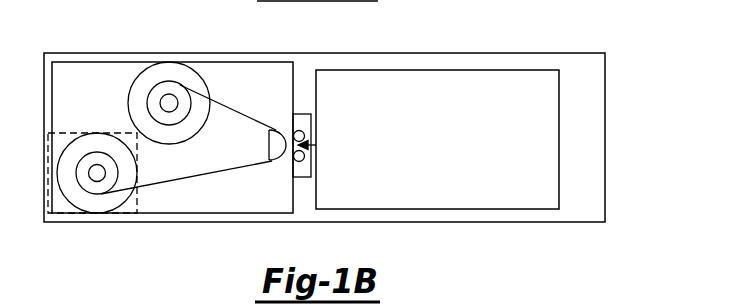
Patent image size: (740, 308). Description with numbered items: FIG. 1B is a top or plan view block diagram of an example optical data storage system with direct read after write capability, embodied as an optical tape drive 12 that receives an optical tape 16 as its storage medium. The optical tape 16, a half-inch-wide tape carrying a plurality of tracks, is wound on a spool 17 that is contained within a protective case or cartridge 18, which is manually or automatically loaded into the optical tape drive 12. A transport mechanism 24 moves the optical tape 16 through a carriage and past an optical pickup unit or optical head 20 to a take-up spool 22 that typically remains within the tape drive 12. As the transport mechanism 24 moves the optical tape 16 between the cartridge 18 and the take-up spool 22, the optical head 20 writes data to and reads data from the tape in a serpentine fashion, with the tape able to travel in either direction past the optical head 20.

The optical tape drive 12 is at (605, 80).
The transport mechanism 24 is at (72, 75).
The take-up spool 22 is at (170, 70).
The spool 17 is at (93, 207).
The cartridge 18 is at (107, 133).
The optical tape 16 is at (198, 178).
The optical head 20 is at (559, 140).